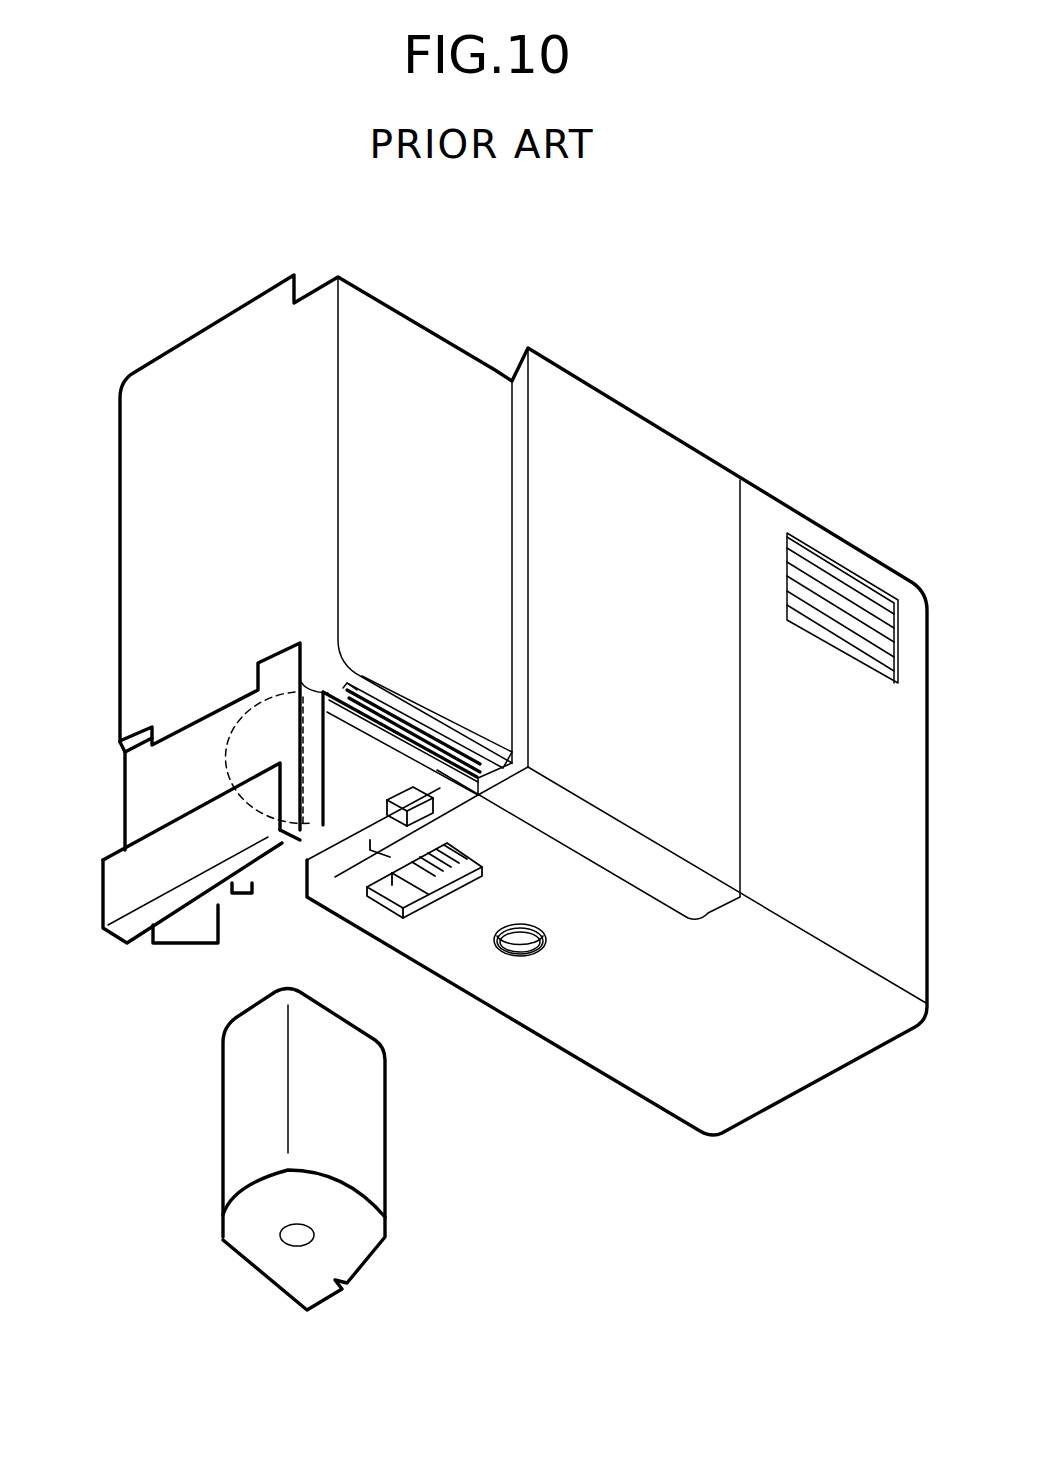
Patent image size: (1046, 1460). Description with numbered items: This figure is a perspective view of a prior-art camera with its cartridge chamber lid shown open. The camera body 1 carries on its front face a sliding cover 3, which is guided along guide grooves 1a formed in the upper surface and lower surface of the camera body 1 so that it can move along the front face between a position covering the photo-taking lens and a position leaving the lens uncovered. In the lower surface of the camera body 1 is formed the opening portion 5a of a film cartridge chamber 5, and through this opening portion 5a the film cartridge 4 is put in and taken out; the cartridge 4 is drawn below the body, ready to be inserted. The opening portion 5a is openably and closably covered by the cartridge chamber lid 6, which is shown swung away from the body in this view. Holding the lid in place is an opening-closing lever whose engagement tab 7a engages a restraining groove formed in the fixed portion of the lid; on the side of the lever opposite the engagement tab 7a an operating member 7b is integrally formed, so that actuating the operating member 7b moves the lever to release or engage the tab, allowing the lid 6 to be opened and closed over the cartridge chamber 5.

The camera body 1 is at (809, 508).
The guide grooves 1a is at (427, 735).
The sliding cover 3 is at (670, 445).
The film cartridge 4 is at (370, 1180).
The film cartridge chamber 5 is at (355, 745).
The opening portion 5a is at (368, 752).
The cartridge chamber lid 6 is at (158, 783).
The engagement tab 7a is at (413, 818).
The operating member 7b is at (450, 878).